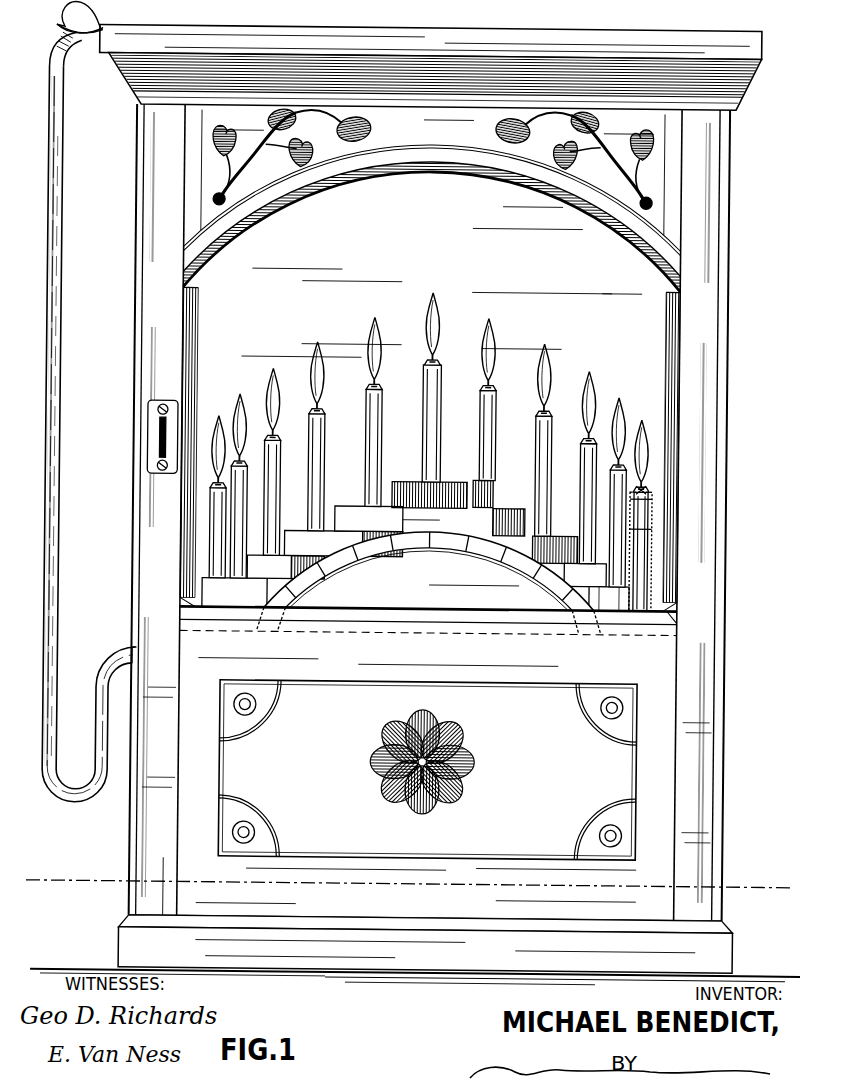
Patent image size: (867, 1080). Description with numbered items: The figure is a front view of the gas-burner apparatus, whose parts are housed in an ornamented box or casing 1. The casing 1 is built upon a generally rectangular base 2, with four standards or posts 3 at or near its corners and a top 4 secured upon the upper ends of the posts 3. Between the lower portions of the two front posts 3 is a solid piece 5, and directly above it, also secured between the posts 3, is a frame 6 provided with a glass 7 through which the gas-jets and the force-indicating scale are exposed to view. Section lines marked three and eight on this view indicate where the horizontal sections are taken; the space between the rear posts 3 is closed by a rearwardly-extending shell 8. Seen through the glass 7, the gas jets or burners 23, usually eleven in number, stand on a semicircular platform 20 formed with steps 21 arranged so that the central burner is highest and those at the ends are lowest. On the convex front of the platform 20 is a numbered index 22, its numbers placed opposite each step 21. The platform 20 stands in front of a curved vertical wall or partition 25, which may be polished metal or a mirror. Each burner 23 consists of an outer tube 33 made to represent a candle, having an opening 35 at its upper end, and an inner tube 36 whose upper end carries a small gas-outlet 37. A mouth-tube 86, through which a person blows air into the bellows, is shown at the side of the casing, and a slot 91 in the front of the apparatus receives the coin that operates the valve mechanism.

The casing 1 is at (446, 513).
The base 2 is at (398, 963).
The standards or posts 3 is at (245, 132).
The top 4 is at (553, 28).
The solid piece 5 is at (427, 770).
The frame 6 is at (491, 650).
The glass 7 is at (432, 217).
The shell 8 is at (48, 876).
The semicircular platform 20 is at (429, 582).
The steps 21 is at (416, 534).
The numbered index 22 is at (512, 567).
The gas jets or burners 23 is at (431, 389).
The curved vertical wall or partition 25 is at (617, 322).
The outer tube 33 is at (423, 406).
The opening 35 is at (643, 488).
The inner tube 36 is at (652, 527).
The gas-outlet 37 is at (652, 497).
The mouth-tube 86 is at (61, 302).
The slot 91 is at (146, 443).